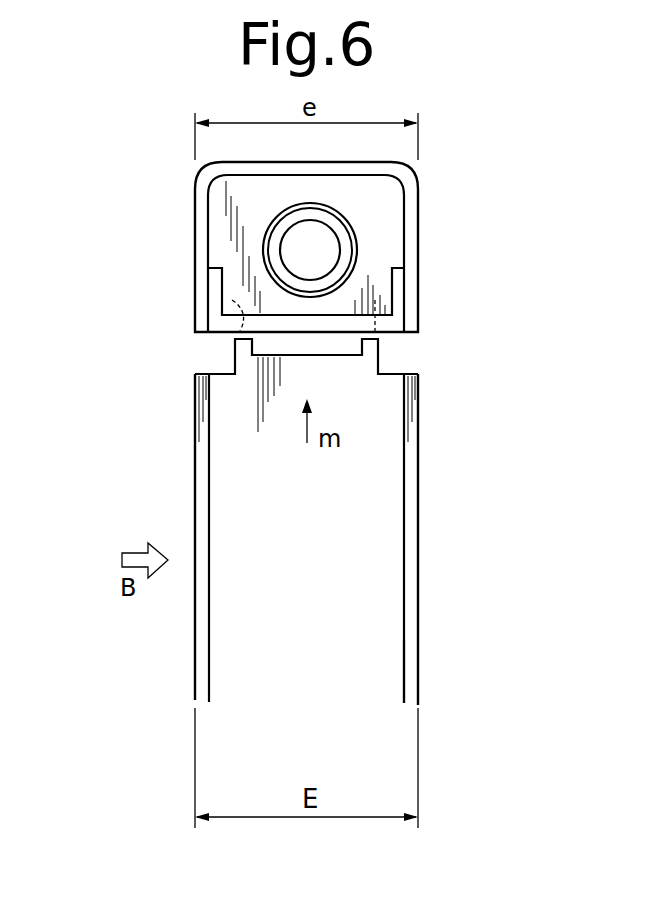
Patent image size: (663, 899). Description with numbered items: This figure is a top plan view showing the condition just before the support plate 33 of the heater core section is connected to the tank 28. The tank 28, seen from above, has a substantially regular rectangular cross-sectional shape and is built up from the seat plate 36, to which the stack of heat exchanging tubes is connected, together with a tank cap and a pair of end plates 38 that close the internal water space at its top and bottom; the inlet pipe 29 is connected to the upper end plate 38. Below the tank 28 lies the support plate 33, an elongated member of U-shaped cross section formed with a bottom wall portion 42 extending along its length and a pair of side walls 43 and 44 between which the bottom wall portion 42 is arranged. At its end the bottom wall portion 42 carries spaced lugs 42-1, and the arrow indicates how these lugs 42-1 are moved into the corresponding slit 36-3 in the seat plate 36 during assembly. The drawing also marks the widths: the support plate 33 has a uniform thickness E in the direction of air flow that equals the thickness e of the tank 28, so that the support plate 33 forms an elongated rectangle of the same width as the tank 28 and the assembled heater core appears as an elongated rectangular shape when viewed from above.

The tank 28 is at (432, 192).
The inlet pipe 29 is at (340, 233).
The end plate 38 is at (387, 243).
The seat plate 36 is at (395, 305).
The slit 36-3 is at (232, 302).
The lug 42-1 is at (372, 349).
The bottom wall portion 42 is at (338, 520).
The support plate 33 is at (432, 600).
The side wall 43 is at (200, 674).
The side wall 44 is at (412, 682).